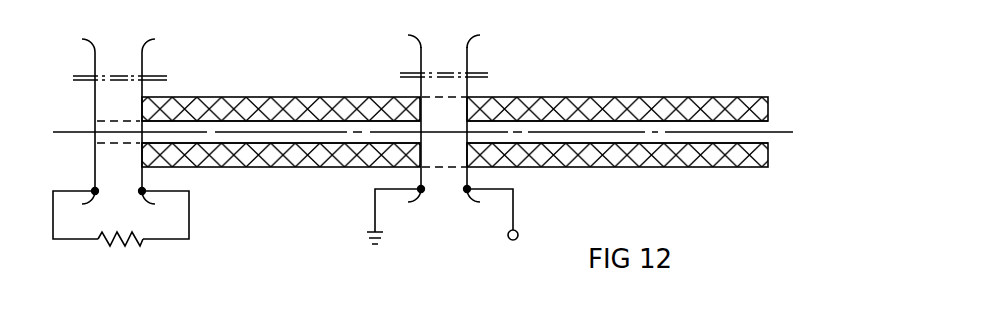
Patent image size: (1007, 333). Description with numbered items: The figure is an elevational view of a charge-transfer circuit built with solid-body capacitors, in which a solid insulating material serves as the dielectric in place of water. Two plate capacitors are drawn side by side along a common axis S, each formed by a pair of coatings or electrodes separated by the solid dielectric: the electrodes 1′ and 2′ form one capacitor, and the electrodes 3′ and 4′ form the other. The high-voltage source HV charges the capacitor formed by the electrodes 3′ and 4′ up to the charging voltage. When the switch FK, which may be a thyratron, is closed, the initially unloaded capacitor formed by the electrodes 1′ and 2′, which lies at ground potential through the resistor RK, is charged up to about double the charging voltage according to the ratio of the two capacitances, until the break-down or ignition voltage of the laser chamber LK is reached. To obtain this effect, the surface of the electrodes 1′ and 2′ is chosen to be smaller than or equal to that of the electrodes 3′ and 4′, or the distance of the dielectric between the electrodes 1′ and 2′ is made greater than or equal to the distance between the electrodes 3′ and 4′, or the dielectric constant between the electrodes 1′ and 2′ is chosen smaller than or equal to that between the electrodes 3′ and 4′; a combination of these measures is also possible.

The coating or electrode 1′ is at (233, 121).
The coating or electrode 2′ is at (290, 97).
The coating or electrode 3′ is at (550, 97).
The coating or electrode 4′ is at (613, 121).
The center axis / conductor S is at (79, 132).
The laser chamber LK is at (120, 112).
The switch FK is at (427, 131).
The charging resistor RK is at (118, 245).
The high-voltage source HV is at (500, 230).